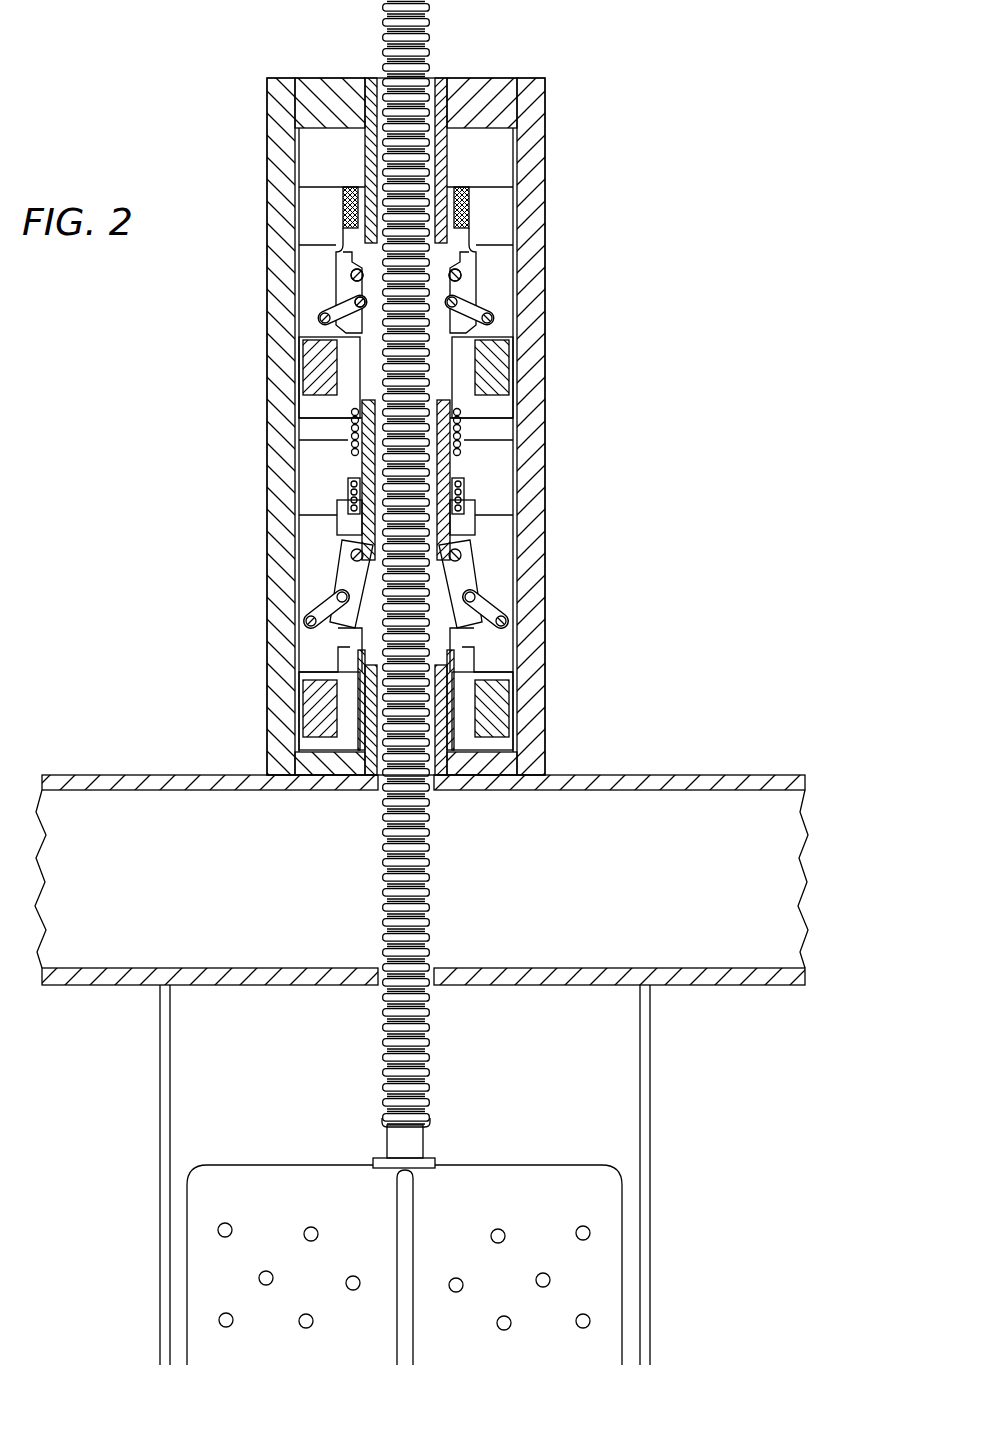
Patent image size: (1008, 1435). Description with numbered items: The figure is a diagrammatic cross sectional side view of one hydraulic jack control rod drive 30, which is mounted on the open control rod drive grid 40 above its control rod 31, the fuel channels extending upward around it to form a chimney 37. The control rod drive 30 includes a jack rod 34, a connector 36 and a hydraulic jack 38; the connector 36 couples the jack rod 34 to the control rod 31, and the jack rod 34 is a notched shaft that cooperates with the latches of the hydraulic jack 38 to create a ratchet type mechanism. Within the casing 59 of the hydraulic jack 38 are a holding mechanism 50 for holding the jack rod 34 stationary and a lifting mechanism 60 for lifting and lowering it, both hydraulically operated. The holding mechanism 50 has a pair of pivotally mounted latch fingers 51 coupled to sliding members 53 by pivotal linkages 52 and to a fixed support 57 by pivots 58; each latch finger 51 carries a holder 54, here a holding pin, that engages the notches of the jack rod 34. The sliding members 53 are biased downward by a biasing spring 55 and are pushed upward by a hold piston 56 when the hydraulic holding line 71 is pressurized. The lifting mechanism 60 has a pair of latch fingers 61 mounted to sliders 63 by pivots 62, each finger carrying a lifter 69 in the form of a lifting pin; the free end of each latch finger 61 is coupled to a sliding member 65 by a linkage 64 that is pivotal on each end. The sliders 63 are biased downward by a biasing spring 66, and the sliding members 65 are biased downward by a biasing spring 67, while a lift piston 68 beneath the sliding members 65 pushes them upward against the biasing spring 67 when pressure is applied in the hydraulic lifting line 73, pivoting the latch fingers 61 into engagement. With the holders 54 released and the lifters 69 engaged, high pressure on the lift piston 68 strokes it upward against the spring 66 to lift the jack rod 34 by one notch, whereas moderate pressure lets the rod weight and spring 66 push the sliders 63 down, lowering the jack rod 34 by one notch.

The control rod drive 30 is at (523, 60).
The control rod 31 is at (604, 1261).
The jack rod 34 is at (378, 48).
The connector 36 is at (393, 1145).
The chimney 37 is at (662, 1062).
The hydraulic jack 38 is at (263, 105).
The control rod drive grid 40 is at (571, 888).
The holding mechanism 50 is at (487, 262).
The latch fingers 51 is at (458, 287).
The pivotal linkages 52 is at (330, 307).
The sliding members 53 is at (500, 218).
The holder 54 is at (345, 300).
The biasing spring 55 is at (345, 205).
The hold piston 56 is at (492, 368).
The fixed support 57 is at (492, 165).
The pivots 58 is at (350, 268).
The casing 59 is at (532, 322).
The lifting mechanism 60 is at (487, 570).
The latch fingers 61 is at (335, 578).
The pivots 62 is at (345, 548).
The sliders 63 is at (345, 525).
The linkage 64 is at (318, 615).
The sliding members 65 is at (492, 468).
The biasing spring 66 is at (470, 510).
The biasing spring 67 is at (350, 432).
The lift piston 68 is at (498, 710).
The lifter 69 is at (470, 633).
The hydraulic holding line 71 is at (513, 418).
The hydraulic lifting line 73 is at (520, 752).